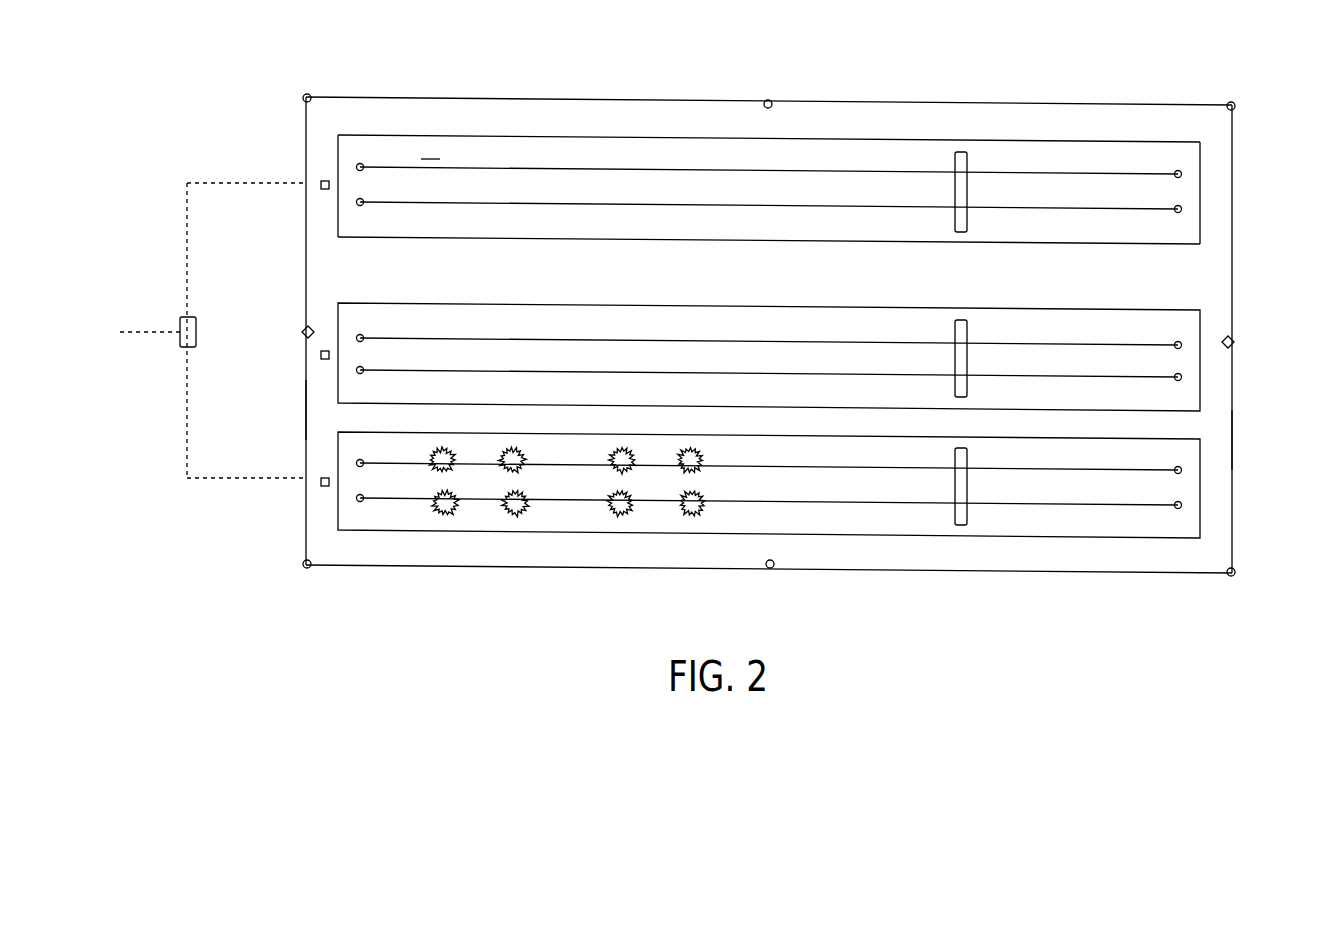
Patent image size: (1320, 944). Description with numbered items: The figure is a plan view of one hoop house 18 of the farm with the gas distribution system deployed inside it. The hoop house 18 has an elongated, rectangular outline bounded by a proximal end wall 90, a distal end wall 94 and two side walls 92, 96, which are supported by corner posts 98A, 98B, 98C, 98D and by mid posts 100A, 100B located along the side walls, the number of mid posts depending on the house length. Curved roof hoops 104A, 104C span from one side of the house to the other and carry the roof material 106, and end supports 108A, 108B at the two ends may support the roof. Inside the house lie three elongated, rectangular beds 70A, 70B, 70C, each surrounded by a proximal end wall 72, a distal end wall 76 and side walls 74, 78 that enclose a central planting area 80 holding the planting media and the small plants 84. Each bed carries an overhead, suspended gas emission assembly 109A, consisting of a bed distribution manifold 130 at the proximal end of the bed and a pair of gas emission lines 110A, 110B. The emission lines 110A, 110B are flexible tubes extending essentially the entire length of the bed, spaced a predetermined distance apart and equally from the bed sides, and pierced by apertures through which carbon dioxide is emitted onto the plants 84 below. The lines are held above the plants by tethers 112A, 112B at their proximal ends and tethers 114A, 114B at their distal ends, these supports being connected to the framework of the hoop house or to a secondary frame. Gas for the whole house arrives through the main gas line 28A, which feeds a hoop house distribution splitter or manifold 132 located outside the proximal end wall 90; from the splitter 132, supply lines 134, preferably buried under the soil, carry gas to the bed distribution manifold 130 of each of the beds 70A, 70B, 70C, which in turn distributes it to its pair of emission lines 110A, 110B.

The hoop house 18 is at (752, 332).
The side wall 96 is at (552, 98).
The side wall 92 is at (937, 575).
The first or proximal end wall 90 is at (305, 445).
The second or distal end wall 94 is at (1233, 511).
The roof hoop 104A is at (305, 410).
The roof hoop 104C is at (1233, 433).
The corner post 98A is at (309, 567).
The corner post 98B is at (1228, 570).
The corner post 98C is at (1228, 103).
The corner post 98D is at (309, 96).
The mid post 100A is at (772, 566).
The mid post 100B is at (769, 100).
The end support 108A is at (306, 330).
The end support 108B is at (1232, 342).
The bed distribution manifold 130 is at (321, 182).
The bed 70A is at (764, 170).
The bed 70B is at (1254, 365).
The bed 70C is at (811, 506).
The central planting area 80 is at (430, 150).
The side wall of bed 78 is at (995, 137).
The side wall of bed 74 is at (510, 238).
The distal end wall of bed 76 is at (1201, 190).
The proximal end wall of bed 72 is at (340, 207).
The gas emission line 110A is at (492, 169).
The gas emission line 110B is at (695, 207).
The tether 112A is at (363, 164).
The tether 112B is at (362, 205).
The tether 114A is at (1176, 171).
The tether 114B is at (1176, 212).
The roof material 106 is at (939, 132).
The plants 84 is at (440, 447).
The gas emission assembly 109A is at (206, 349).
The hoop house distribution splitter or manifold 132 is at (182, 318).
The main gas line 28A is at (140, 340).
The supply line 134 is at (186, 456).